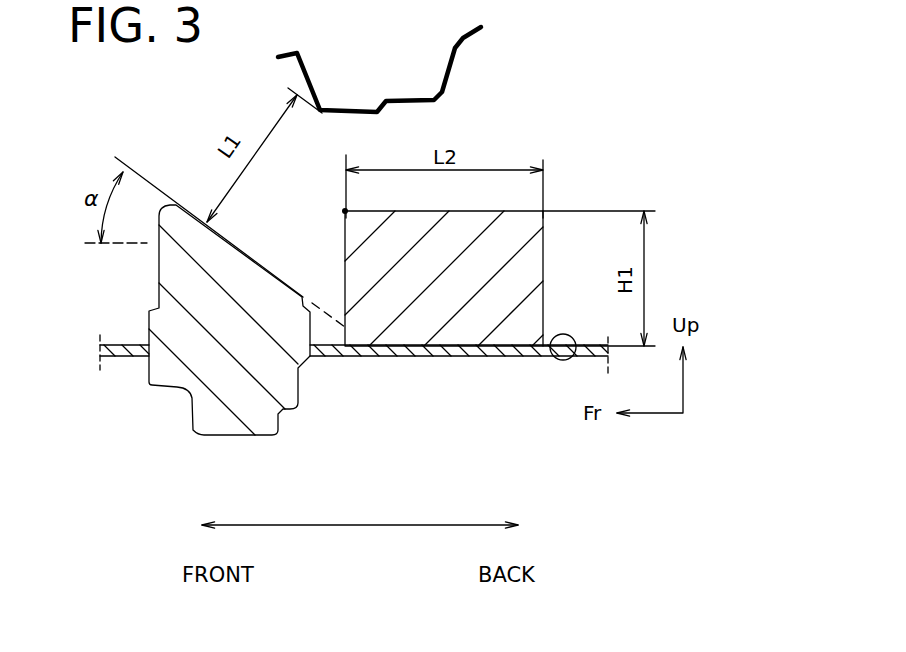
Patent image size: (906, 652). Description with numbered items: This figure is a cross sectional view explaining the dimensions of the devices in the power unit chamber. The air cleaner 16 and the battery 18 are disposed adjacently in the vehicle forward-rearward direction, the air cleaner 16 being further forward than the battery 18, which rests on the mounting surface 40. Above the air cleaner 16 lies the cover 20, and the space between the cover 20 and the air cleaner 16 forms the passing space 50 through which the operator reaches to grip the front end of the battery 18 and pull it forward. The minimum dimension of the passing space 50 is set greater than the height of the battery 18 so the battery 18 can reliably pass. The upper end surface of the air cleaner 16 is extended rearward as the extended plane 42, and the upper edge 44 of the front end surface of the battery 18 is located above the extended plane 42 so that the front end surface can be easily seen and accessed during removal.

The air cleaner 16 is at (157, 287).
The battery 18 is at (463, 210).
The cover 20 is at (455, 63).
The mounting surface 40 is at (575, 357).
The extended plane 42 is at (448, 398).
The upper edge of the front end surface of the battery 44 is at (343, 209).
The passing space 50 is at (298, 200).